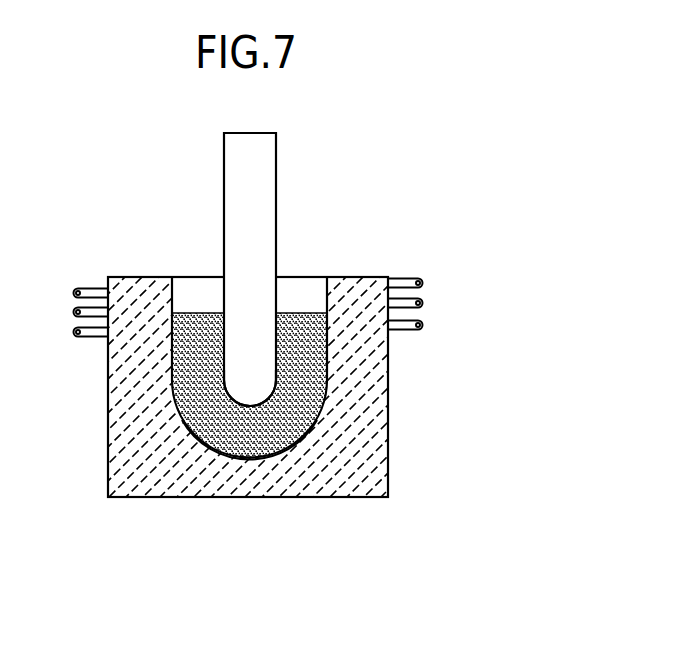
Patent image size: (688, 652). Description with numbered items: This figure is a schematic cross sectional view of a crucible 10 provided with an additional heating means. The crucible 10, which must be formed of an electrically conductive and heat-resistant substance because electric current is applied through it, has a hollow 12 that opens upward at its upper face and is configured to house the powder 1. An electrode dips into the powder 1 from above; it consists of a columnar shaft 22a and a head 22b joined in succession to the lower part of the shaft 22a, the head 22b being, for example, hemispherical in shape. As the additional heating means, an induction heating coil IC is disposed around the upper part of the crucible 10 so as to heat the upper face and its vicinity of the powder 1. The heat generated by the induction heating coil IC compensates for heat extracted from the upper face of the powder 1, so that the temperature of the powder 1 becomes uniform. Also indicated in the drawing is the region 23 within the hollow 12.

The crucible 10 is at (136, 302).
The hollow 12 is at (173, 343).
The columnar shaft 22a is at (258, 173).
The head 22b is at (252, 385).
The filling material 23 is at (272, 398).
The powder 1 is at (203, 440).
The induction heating coil IC is at (421, 281).